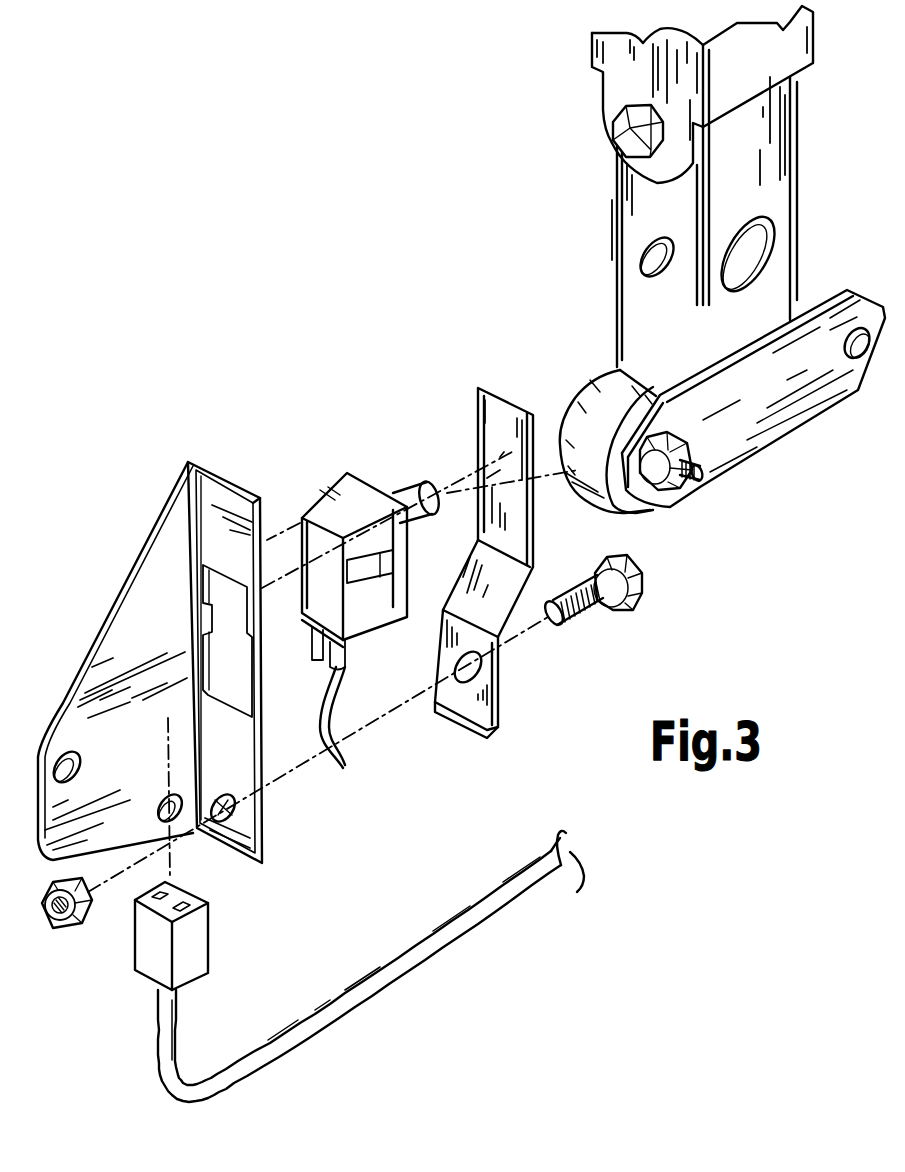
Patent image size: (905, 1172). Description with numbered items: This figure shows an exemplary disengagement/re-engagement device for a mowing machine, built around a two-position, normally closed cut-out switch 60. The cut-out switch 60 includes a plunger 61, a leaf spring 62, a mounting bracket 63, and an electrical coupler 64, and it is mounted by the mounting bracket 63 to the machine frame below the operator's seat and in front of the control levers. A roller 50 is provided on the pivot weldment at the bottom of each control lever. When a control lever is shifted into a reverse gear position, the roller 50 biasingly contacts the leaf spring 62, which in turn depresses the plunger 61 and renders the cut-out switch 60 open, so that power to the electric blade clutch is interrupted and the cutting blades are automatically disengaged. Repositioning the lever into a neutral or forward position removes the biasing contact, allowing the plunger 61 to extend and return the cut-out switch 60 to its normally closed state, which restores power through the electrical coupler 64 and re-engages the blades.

The roller 50 is at (588, 403).
The cut-out switch 60 is at (330, 517).
The plunger 61 is at (412, 490).
The leaf spring 62 is at (498, 428).
The mounting bracket 63 is at (138, 640).
The electrical coupler 64 is at (351, 731).